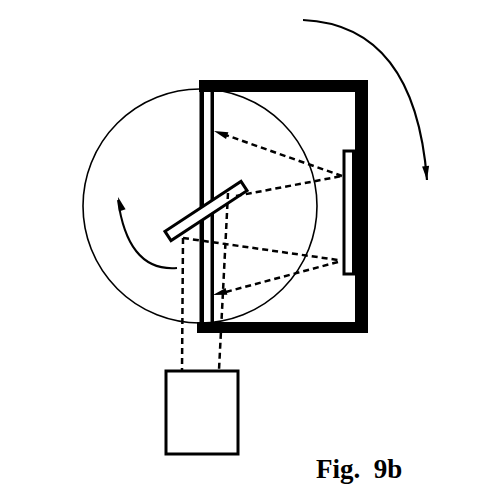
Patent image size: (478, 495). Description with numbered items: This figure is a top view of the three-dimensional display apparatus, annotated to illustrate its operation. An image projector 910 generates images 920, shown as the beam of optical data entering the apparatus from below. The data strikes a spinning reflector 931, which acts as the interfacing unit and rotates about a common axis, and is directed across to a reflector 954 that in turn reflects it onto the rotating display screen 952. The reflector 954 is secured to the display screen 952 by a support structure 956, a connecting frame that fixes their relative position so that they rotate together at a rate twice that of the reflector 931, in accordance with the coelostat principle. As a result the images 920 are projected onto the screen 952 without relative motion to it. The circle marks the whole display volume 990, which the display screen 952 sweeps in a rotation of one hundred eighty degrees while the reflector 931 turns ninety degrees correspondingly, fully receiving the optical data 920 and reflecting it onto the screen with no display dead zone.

The image projector 910 is at (165, 423).
The images 920 is at (183, 345).
The reflector 931 is at (175, 212).
The rotating display screen 952 is at (198, 134).
The reflector 954 is at (366, 228).
The support structure 956 is at (323, 333).
The display volume 990 is at (118, 260).